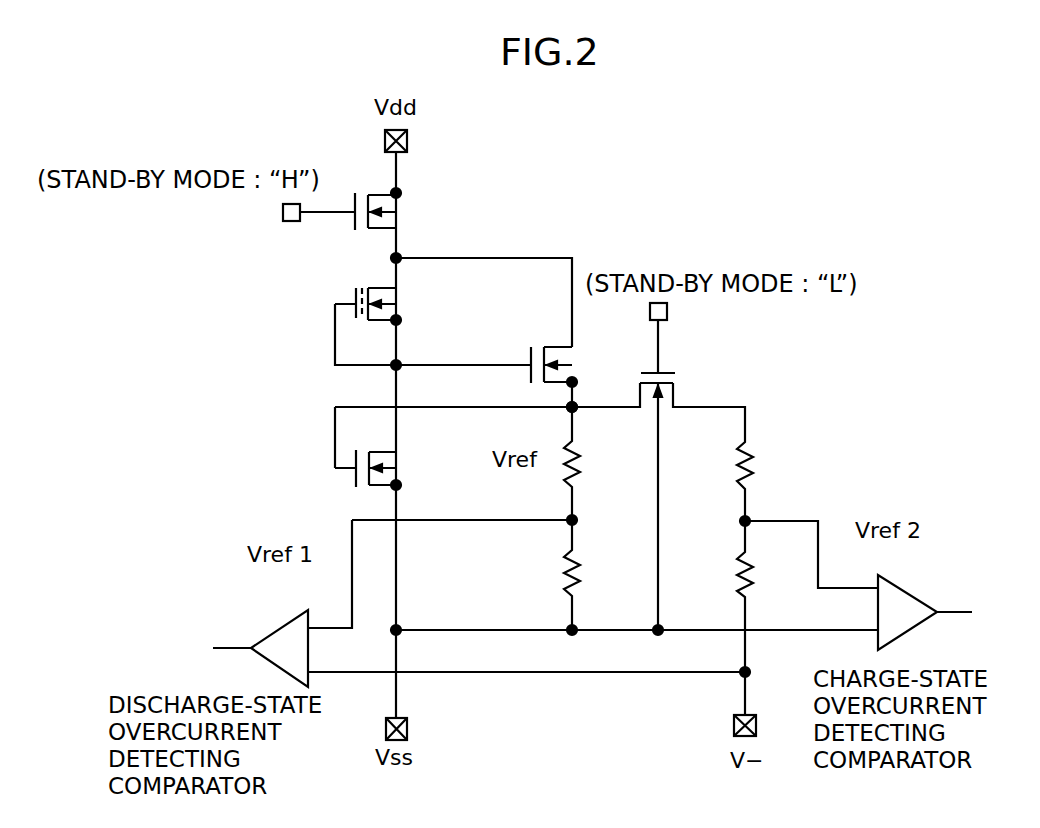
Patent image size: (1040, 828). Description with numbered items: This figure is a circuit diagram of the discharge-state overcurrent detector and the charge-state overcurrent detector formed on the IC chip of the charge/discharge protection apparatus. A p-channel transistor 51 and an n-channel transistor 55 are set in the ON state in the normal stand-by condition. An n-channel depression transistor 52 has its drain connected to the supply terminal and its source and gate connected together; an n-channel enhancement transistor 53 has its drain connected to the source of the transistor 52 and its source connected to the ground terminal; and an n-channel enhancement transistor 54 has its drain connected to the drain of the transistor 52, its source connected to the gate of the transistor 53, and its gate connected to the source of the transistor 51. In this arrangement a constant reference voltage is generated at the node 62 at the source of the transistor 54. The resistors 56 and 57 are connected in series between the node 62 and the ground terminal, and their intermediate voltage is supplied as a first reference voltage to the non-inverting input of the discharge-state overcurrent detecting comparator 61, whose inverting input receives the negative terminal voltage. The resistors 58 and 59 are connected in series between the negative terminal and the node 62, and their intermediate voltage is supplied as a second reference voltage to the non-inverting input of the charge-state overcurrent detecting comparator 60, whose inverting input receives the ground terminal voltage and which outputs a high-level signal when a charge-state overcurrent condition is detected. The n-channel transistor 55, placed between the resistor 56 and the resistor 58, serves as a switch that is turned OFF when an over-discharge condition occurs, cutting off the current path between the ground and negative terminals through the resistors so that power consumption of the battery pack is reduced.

The p-channel transistor 51 is at (404, 212).
The n-channel depression transistor 52 is at (404, 305).
The n-channel enhancement transistor 53 is at (404, 468).
The n-channel enhancement transistor 54 is at (545, 348).
The n-channel transistor 55 is at (683, 380).
The resistor 56 is at (563, 470).
The resistor 57 is at (563, 583).
The resistor 58 is at (737, 472).
The resistor 59 is at (737, 583).
The charge-state overcurrent detecting comparator 60 is at (912, 592).
The discharge-state overcurrent detecting comparator 61 is at (261, 642).
The node 62 is at (566, 412).